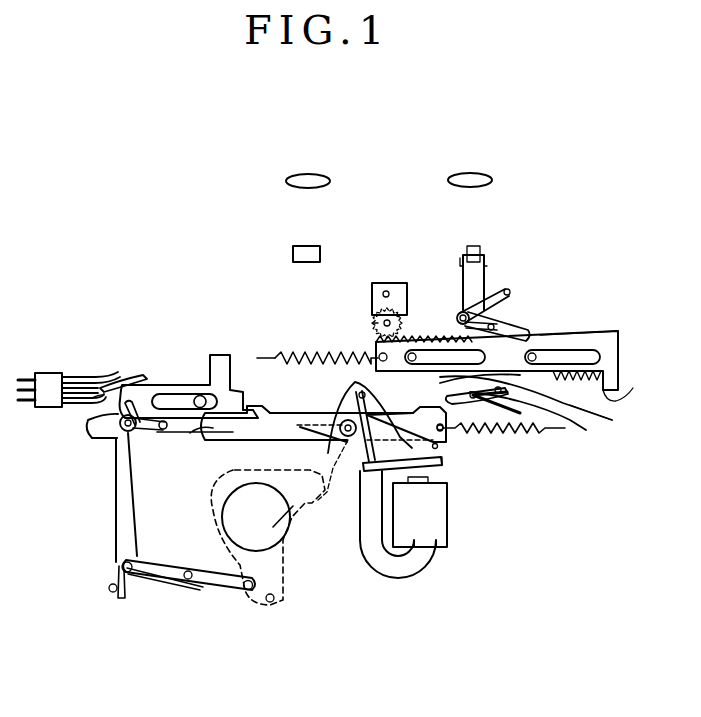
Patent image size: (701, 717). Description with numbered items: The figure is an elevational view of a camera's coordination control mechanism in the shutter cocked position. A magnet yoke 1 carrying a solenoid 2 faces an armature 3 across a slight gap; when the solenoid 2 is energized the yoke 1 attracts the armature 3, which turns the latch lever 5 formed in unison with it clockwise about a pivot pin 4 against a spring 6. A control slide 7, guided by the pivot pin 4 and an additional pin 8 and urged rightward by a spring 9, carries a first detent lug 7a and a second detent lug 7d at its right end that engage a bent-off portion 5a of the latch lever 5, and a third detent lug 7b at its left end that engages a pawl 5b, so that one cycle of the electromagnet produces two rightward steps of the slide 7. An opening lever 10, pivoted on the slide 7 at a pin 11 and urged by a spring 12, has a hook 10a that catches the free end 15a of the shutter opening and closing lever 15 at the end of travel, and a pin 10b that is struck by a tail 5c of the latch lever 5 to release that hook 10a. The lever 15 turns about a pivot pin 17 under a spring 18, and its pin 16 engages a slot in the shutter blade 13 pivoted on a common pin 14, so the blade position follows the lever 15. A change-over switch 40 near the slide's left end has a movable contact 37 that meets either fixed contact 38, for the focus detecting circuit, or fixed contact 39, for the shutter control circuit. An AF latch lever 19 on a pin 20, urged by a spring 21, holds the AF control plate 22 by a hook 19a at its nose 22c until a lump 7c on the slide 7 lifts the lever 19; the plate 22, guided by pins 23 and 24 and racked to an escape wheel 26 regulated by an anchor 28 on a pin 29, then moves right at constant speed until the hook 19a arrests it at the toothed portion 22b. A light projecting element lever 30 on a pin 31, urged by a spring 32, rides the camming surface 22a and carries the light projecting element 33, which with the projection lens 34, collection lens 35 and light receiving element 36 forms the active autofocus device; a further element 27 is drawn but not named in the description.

The magnet yoke 1 is at (394, 578).
The solenoid 2 is at (445, 537).
The armature 3 is at (444, 466).
The pivot pin 4 is at (333, 470).
The latch lever 5 is at (290, 413).
The bent-off portion 5a is at (440, 448).
The pawl 5b is at (262, 406).
The tail 5c is at (238, 430).
The spring 6 is at (370, 463).
The control slide 7 is at (221, 355).
The first detent lug 7a is at (443, 448).
The third detent lug 7b is at (238, 395).
The lump 7c is at (420, 412).
The second detent lug 7d is at (356, 392).
The additional pin 8 is at (203, 395).
The spring 9 is at (542, 435).
The opening lever 10 is at (90, 438).
The hook 10a is at (108, 445).
The pin 10b is at (210, 434).
The pin 11 is at (135, 430).
The spring 12 is at (165, 432).
The shutter blade 13 is at (283, 582).
The common pin 14 is at (270, 603).
The shutter opening and closing lever 15 is at (216, 586).
The free end 15a is at (140, 458).
The pin 16 is at (245, 592).
The pivot pin 17 is at (128, 578).
The spring 18 is at (110, 593).
The AF latch lever 19 is at (526, 413).
The hook 19a is at (614, 420).
The pin 20 is at (480, 410).
The spring 21 is at (518, 415).
The AF control plate 22 is at (523, 335).
The camming surface 22a is at (580, 333).
The toothed portion 22b is at (611, 383).
The nose 22c is at (458, 392).
The pin 23 is at (532, 352).
The pin 24 is at (418, 351).
The escape wheel 26 is at (372, 318).
The gear shaft 27 is at (380, 337).
The anchor 28 is at (378, 283).
The pin 29 is at (389, 292).
The light projecting element lever 30 is at (513, 324).
The pin 31 is at (458, 312).
The spring 32 is at (508, 300).
The light projecting element 33 is at (481, 250).
The projection lens 34 is at (492, 178).
The collection lens 35 is at (330, 180).
The light receiving element 36 is at (292, 246).
The movable contact 37 is at (141, 376).
The fixed contact 38 is at (87, 377).
The fixed contact 39 is at (80, 395).
The change-over switch 40 is at (44, 373).